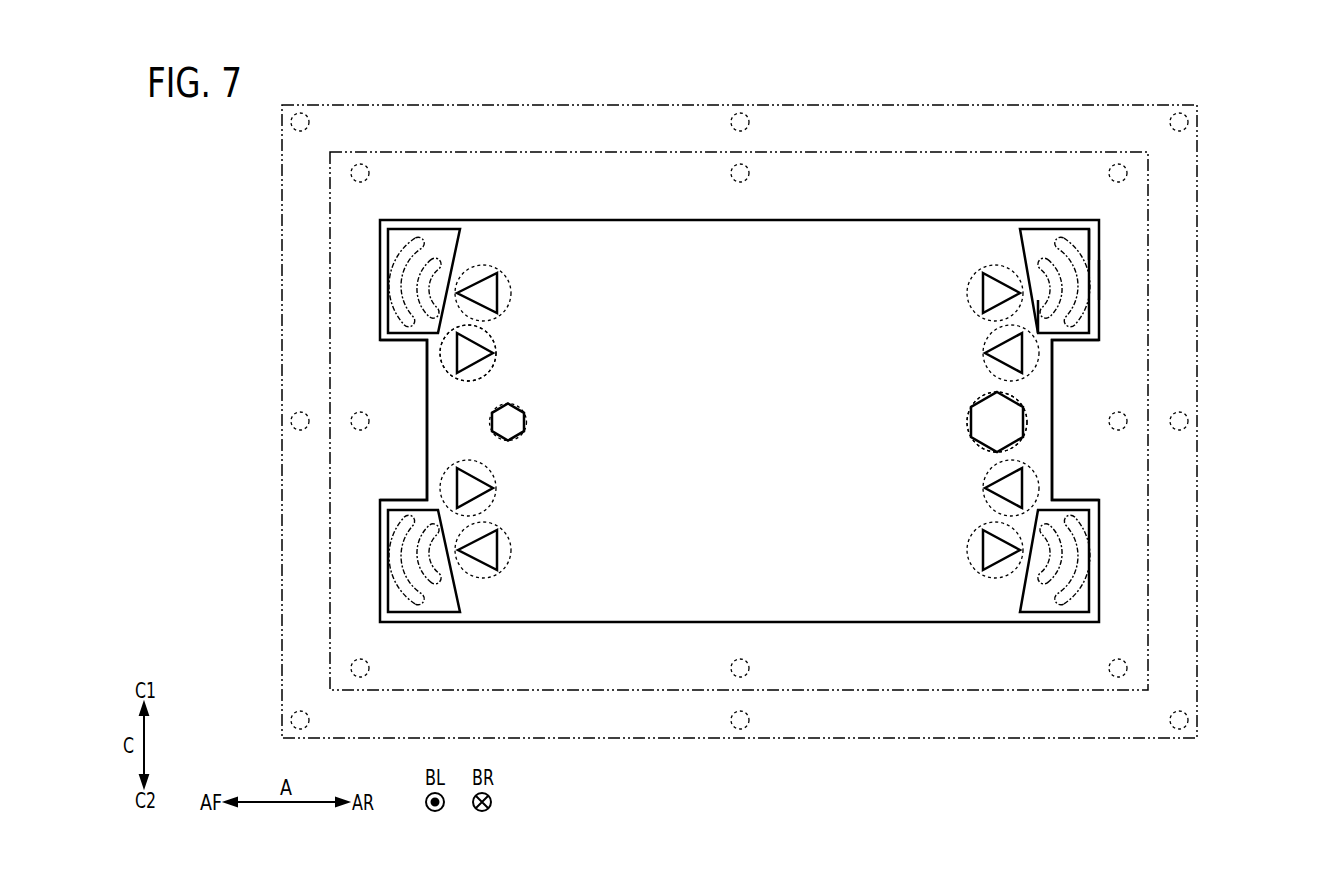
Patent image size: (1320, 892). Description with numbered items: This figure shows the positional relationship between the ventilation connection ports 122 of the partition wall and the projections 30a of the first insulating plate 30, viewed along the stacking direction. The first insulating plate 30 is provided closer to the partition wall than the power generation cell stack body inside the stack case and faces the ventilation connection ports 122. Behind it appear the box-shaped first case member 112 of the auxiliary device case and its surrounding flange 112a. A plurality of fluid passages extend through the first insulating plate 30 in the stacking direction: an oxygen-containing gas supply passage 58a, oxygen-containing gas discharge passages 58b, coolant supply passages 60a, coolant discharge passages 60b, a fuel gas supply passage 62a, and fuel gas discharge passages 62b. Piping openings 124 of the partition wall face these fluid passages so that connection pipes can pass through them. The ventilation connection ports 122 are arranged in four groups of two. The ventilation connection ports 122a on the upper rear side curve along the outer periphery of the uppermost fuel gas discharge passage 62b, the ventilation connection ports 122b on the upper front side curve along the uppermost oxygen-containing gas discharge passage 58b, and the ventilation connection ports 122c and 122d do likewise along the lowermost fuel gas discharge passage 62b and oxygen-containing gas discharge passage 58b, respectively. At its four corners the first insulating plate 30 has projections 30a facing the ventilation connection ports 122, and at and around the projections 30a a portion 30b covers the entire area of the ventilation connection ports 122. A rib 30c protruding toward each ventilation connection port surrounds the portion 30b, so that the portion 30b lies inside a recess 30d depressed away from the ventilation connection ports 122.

The first insulating plate 30 is at (697, 232).
The projection 30a is at (380, 343).
The portion facing the ventilation connection ports 30b is at (1065, 292).
The rib 30c is at (1100, 282).
The recess 30d is at (1090, 247).
The oxygen-containing gas supply passage 58a is at (993, 423).
The oxygen-containing gas discharge passage 58b is at (483, 293).
The coolant supply passage 60a is at (1007, 352).
The coolant discharge passage 60b is at (470, 352).
The fuel gas supply passage 62a is at (515, 421).
The fuel gas discharge passage 62b is at (997, 293).
The first case member 112 is at (1128, 104).
The flange 112a is at (1190, 166).
The ventilation connection port 122 is at (739, 421).
The ventilation connection port 122a is at (1058, 242).
The ventilation connection port 122b is at (422, 242).
The ventilation connection port 122c is at (1058, 602).
The ventilation connection port 122d is at (417, 602).
The piping opening 124 is at (497, 363).